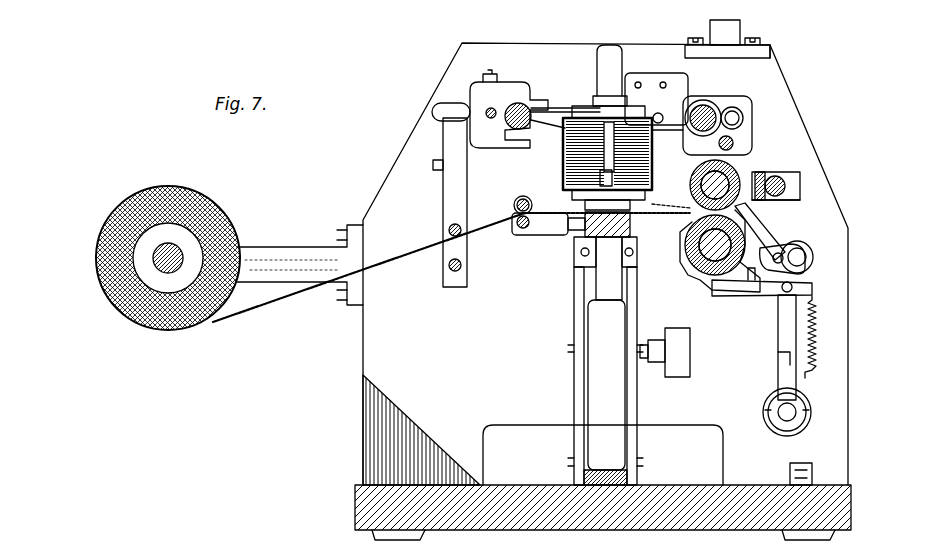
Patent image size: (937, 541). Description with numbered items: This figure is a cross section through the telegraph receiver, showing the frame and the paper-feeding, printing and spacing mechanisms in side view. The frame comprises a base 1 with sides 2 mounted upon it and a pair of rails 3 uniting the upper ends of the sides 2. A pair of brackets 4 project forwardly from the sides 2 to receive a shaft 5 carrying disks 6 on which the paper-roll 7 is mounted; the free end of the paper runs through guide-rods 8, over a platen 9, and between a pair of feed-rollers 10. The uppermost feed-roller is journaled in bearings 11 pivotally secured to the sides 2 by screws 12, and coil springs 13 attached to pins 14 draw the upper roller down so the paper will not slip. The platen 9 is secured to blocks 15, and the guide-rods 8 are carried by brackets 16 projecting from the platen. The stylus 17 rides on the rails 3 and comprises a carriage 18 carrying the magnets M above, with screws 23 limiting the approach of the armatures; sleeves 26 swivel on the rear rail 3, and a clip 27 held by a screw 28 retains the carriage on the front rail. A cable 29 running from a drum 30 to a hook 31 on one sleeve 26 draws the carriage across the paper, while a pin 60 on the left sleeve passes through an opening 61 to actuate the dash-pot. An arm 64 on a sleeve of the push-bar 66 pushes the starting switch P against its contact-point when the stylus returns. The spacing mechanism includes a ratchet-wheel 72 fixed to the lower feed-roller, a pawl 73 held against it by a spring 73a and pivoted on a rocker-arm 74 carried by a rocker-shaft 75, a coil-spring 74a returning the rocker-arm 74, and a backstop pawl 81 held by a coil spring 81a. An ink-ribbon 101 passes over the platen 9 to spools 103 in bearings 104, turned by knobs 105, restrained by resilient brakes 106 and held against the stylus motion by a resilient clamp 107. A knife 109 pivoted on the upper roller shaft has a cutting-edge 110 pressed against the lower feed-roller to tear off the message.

The base 1 is at (355, 510).
The sides 2 is at (362, 376).
The rails 3 is at (522, 108).
The brackets 4 is at (283, 250).
The shaft 5 is at (170, 252).
The disks 6 is at (150, 293).
The paper-roll 7 is at (170, 300).
The guide-rods 8 is at (514, 204).
The platen 9 is at (585, 240).
The feed-rollers 10 is at (688, 233).
The bearings 11 is at (775, 176).
The screws 12 is at (788, 190).
The coil springs 13 is at (752, 296).
The pins 14 is at (742, 294).
The blocks 15 is at (582, 262).
The brackets 16 is at (532, 236).
The stylus 17 is at (598, 172).
The carriage 18 is at (566, 106).
The screws 23 is at (600, 180).
The sleeves 26 is at (723, 104).
The clip 27 is at (512, 138).
The screw 28 is at (491, 74).
The cable 29 is at (668, 132).
The drum 30 is at (726, 20).
The hook 31 is at (662, 113).
The pin 60 is at (745, 122).
The opening 61 is at (740, 112).
The arm 64 is at (435, 108).
The push-bar 66 is at (488, 110).
The ratchet-wheel 72 is at (698, 280).
The pawl 73 is at (720, 284).
The spring 73a is at (818, 335).
The rocker-arm 74 is at (778, 345).
The coil-spring 74a is at (812, 400).
The rocker-shaft 75 is at (765, 398).
The pawl 81 is at (770, 228).
The coil spring 81a is at (810, 250).
The ink-ribbon 101 is at (644, 244).
The spools 103 is at (583, 302).
The bearings 104 is at (574, 397).
The knobs 105 is at (690, 352).
The resilient brakes 106 is at (588, 368).
The resilient clamp 107 is at (609, 45).
The knife 109 is at (783, 182).
The cutting-edge 110 is at (760, 200).
The magnets M is at (565, 130).
The starting switch P is at (443, 192).